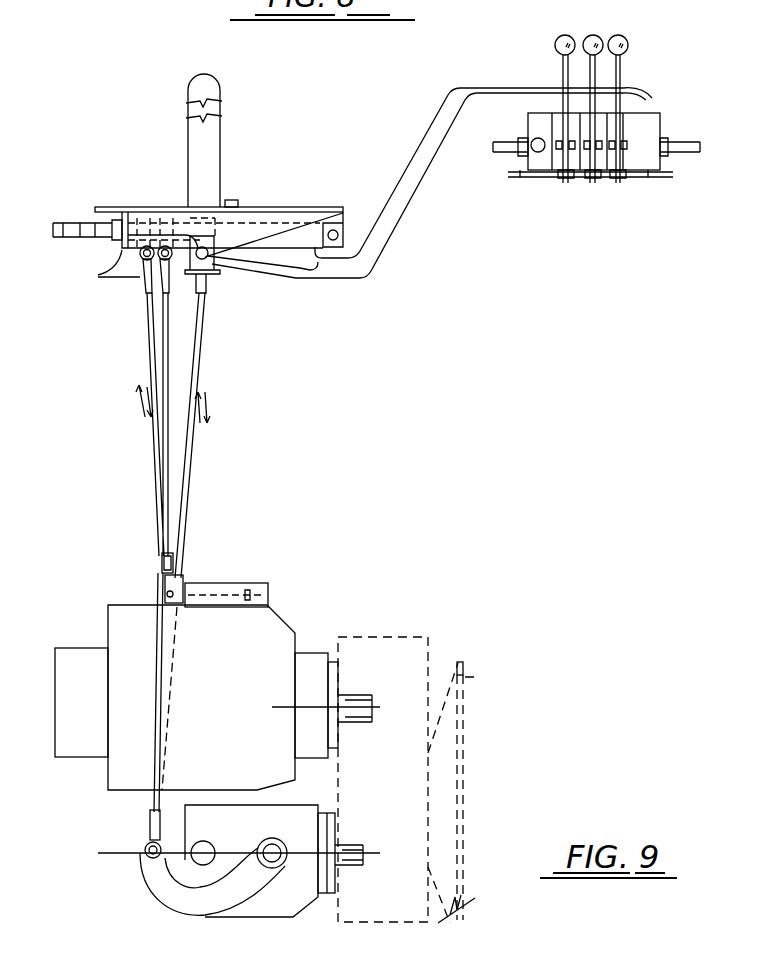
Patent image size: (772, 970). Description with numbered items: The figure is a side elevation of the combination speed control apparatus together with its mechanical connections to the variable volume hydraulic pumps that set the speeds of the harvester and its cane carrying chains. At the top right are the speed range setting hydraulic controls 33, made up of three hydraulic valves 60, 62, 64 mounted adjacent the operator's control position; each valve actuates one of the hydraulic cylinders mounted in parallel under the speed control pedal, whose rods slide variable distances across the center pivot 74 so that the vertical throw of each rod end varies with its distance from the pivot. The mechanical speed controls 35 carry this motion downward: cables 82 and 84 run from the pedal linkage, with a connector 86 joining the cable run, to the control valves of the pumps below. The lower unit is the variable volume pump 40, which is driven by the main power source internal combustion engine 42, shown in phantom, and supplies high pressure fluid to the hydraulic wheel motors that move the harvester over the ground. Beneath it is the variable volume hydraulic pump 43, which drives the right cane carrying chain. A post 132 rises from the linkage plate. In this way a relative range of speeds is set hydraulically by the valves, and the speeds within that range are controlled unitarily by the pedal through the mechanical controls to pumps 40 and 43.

The speed range setting hydraulic controls 33 is at (662, 128).
The hydraulic valve 64 is at (571, 34).
The hydraulic valve 62 is at (599, 34).
The hydraulic valve 60 is at (626, 36).
The post 132 is at (260, 207).
The mechanical speed controls 35 is at (95, 286).
The center pivot 74 is at (210, 262).
The cable 84 is at (152, 323).
The cable 82 is at (203, 332).
The cable connector 86 is at (155, 558).
The variable volume pump 40 is at (293, 630).
The main power source internal combustion engine 42 is at (465, 722).
The variable volume hydraulic pump 43 is at (283, 918).